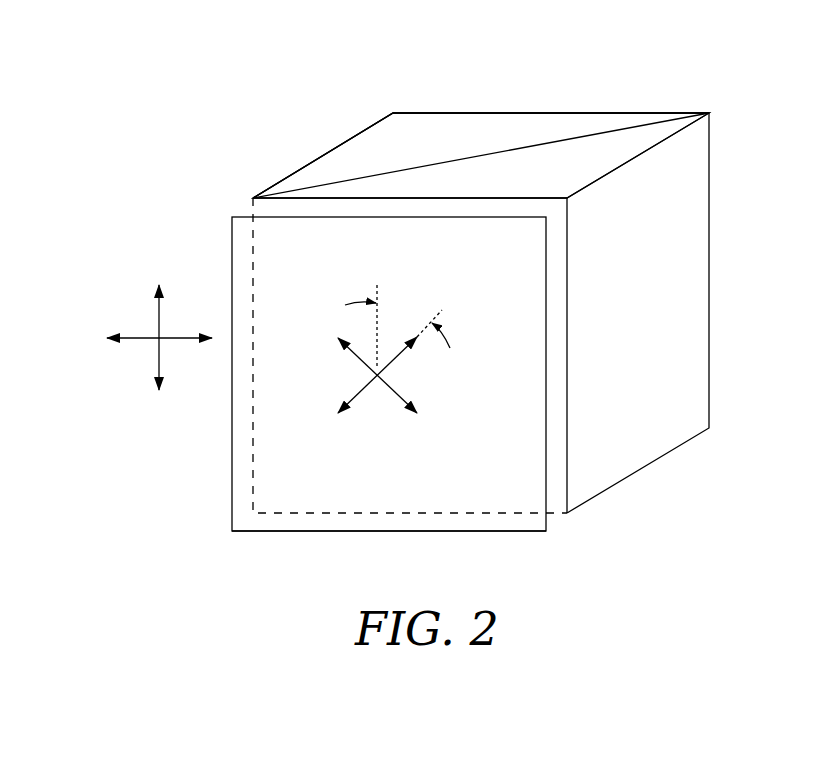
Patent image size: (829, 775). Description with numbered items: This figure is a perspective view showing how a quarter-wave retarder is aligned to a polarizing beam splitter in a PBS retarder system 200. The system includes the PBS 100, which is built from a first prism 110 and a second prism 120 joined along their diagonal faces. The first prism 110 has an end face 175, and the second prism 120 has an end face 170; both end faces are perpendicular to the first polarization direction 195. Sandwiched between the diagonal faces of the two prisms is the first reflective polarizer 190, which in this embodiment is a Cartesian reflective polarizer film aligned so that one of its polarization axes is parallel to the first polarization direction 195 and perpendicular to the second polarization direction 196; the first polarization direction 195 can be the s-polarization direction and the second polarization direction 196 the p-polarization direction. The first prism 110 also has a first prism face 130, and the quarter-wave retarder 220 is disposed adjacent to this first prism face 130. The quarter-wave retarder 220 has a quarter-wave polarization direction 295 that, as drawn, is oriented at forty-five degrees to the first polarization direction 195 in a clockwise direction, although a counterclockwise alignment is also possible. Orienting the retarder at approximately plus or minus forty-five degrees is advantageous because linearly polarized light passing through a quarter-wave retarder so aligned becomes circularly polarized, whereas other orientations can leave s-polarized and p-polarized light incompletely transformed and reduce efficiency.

The PBS retarder system 200 is at (277, 77).
The PBS 100 is at (313, 152).
The first prism 110 is at (567, 513).
The second prism 120 is at (392, 112).
The first prism face 130 is at (263, 208).
The end face 170 is at (533, 125).
The end face 175 is at (630, 140).
The first reflective polarizer 190 is at (297, 188).
The first polarization direction 195 is at (160, 320).
The second polarization direction 196 is at (142, 342).
The quarter-wave retarder 220 is at (437, 522).
The quarter-wave polarization direction 295 is at (392, 363).